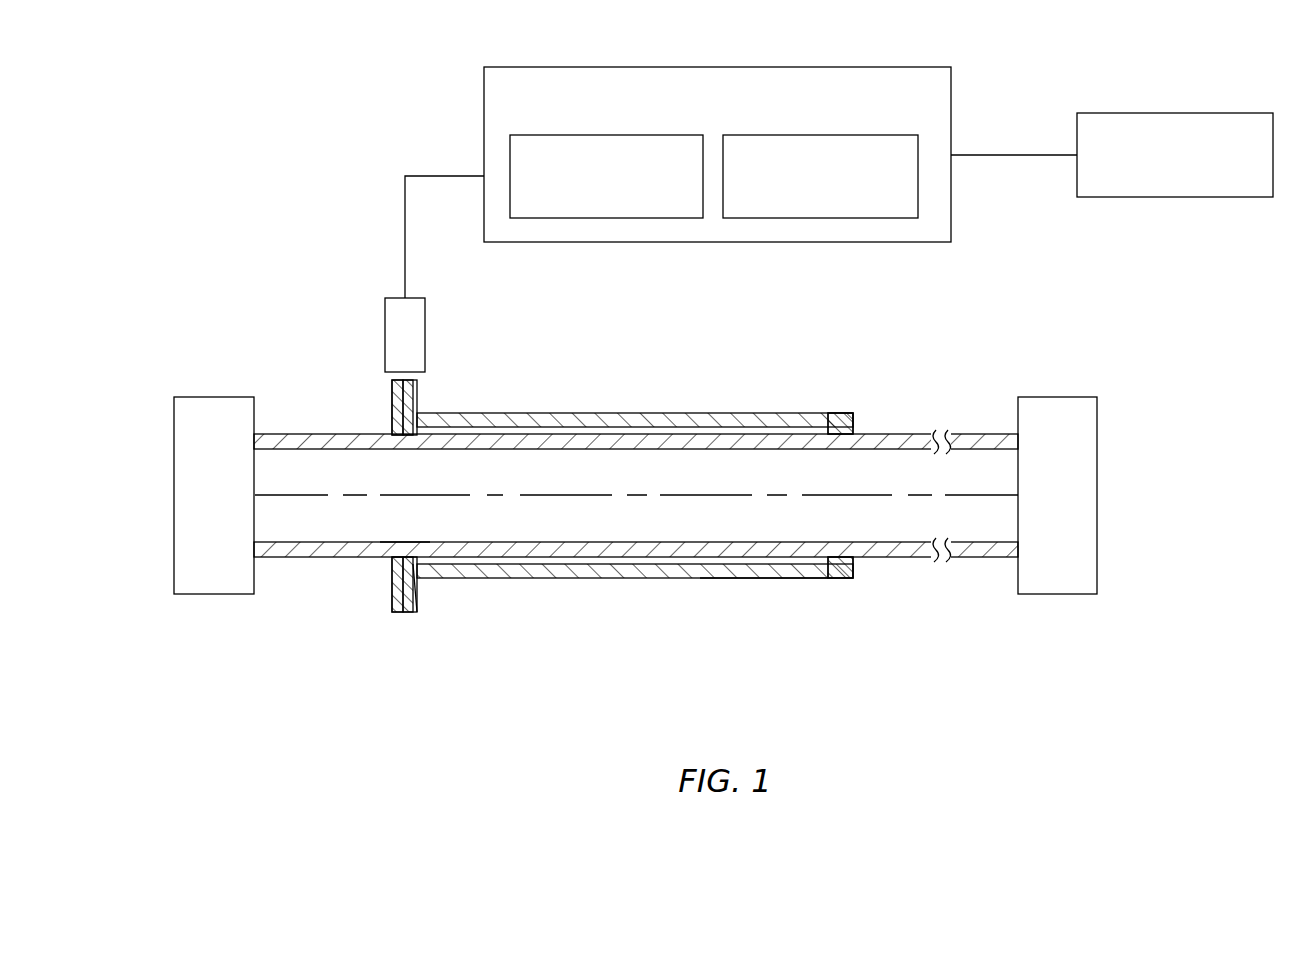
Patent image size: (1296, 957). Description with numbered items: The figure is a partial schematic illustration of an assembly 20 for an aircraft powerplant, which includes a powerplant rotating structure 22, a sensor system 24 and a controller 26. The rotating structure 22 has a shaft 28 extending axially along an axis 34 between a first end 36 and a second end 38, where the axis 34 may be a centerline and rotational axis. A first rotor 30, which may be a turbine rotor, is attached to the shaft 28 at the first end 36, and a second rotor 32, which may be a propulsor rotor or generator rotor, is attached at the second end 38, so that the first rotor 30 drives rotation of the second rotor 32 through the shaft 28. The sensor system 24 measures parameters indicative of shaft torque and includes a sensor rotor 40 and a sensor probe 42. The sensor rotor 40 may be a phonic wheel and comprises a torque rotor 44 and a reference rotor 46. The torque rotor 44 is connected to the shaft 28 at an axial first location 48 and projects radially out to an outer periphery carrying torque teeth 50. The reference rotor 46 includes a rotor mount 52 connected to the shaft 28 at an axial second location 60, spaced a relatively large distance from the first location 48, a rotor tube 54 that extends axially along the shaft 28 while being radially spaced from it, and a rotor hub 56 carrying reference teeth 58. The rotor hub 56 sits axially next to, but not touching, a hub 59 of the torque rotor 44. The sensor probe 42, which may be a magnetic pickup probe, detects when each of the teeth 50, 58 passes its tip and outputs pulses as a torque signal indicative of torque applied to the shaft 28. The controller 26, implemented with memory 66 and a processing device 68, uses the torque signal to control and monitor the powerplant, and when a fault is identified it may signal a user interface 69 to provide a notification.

The assembly 20 is at (187, 73).
The rotating structure 22 is at (1002, 362).
The sensor system 24 is at (370, 378).
The controller 26 is at (952, 112).
The shaft 28 is at (895, 427).
The first rotor 30 is at (1073, 595).
The second rotor 32 is at (195, 595).
The axis 34 is at (560, 495).
The first end 36 is at (1018, 557).
The second end 38 is at (254, 547).
The sensor rotor 40 is at (405, 632).
The sensor probe 42 is at (425, 323).
The torque rotor 44 is at (387, 592).
The reference rotor 46 is at (507, 590).
The first location 48 is at (407, 555).
The torque teeth 50 is at (392, 407).
The rotor mount 52 is at (857, 572).
The rotor tube 54 is at (808, 580).
The rotor hub 56 is at (417, 583).
The reference teeth 58 is at (417, 397).
The hub 59 is at (390, 578).
The second location 60 is at (815, 545).
The memory 66 is at (920, 187).
The processing device 68 is at (593, 218).
The user interface 69 is at (1213, 113).